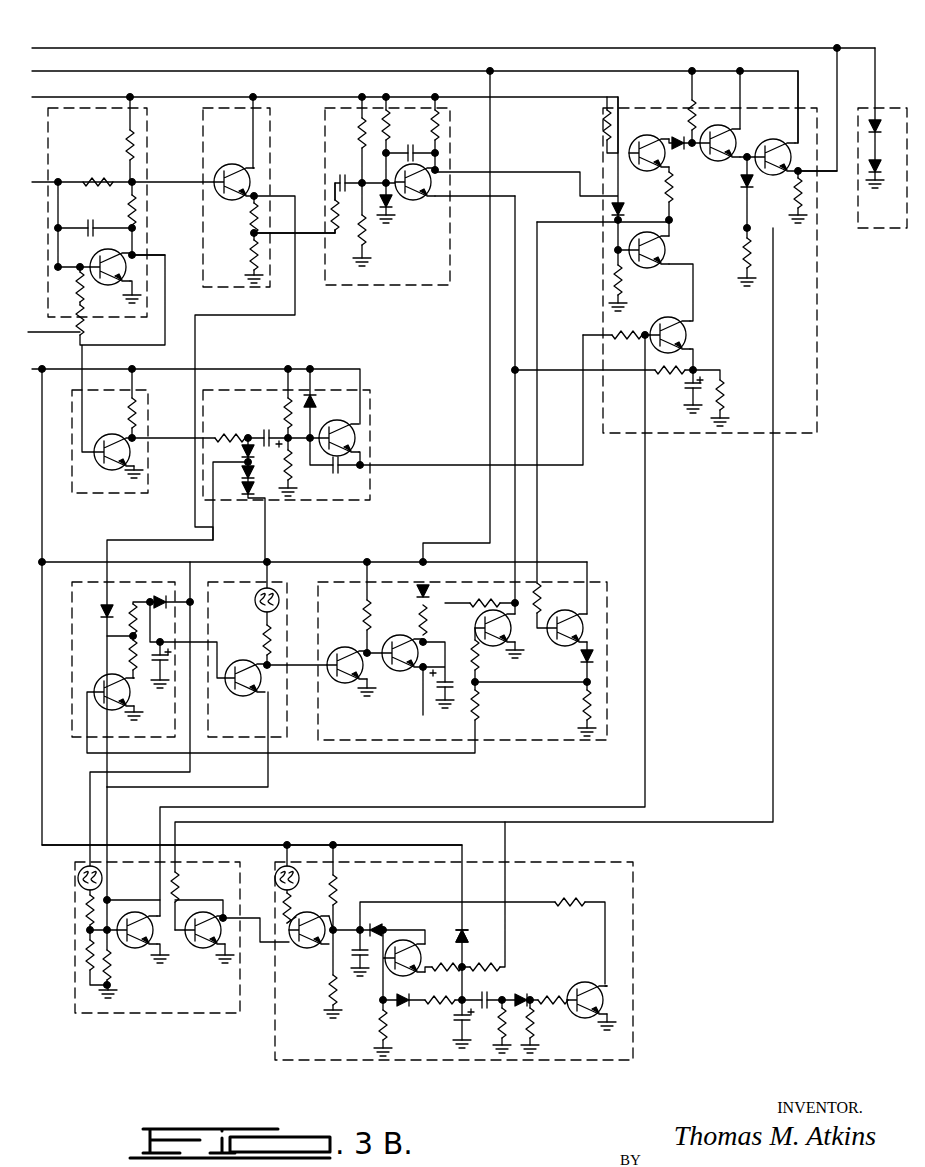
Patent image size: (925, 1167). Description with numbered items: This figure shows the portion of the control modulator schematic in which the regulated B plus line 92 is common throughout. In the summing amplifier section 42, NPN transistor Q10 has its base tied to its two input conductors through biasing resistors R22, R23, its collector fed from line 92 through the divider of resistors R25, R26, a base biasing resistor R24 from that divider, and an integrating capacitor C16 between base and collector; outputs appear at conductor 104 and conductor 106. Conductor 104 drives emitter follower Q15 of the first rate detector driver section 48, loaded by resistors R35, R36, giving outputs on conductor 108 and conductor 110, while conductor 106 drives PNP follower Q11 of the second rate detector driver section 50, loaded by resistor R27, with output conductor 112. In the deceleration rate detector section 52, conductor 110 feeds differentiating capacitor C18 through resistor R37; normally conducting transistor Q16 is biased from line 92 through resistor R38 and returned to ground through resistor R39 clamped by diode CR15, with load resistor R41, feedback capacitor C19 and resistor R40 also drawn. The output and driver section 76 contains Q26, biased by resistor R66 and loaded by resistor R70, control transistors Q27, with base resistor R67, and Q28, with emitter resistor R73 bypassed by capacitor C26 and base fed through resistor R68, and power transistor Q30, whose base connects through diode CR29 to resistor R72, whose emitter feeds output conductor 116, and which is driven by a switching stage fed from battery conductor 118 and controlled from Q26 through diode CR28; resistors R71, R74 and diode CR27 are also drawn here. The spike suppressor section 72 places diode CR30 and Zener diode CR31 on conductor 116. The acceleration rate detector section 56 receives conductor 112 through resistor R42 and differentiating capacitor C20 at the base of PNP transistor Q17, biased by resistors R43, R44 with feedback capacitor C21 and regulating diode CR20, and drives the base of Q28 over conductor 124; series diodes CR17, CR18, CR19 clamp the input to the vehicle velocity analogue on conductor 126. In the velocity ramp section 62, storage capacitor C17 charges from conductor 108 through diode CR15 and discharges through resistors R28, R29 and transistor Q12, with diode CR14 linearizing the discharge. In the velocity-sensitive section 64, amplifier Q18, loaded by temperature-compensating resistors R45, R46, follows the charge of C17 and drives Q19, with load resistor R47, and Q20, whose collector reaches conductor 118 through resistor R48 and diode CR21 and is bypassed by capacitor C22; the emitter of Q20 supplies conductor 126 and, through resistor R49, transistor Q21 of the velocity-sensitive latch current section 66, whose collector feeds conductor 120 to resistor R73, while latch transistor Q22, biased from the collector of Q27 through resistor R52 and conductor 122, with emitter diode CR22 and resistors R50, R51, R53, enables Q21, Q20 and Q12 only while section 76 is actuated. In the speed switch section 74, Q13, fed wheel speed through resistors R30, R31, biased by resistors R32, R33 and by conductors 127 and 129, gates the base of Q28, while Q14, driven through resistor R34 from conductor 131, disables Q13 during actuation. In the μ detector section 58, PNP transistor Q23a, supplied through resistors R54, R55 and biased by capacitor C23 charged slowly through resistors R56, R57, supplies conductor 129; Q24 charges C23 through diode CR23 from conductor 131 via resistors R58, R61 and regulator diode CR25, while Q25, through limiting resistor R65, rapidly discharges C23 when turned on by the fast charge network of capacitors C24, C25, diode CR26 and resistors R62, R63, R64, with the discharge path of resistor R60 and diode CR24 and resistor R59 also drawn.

The summing amplifier section 42 is at (112, 212).
The first rate detector driver section 48 is at (252, 197).
The second rate detector driver section 50 is at (129, 433).
The deceleration rate detector section 52 is at (390, 221).
The acceleration or spin-up rate detector section 56 is at (312, 426).
The μ detector section 58 is at (454, 981).
The velocity ramp section 62 is at (111, 686).
The velocity-sensitive section 64 is at (247, 686).
The velocity-sensitive latch current section 66 is at (462, 686).
The spike suppressor section 72 is at (884, 142).
The speed switch section 74 is at (157, 958).
The output and driver section 76 is at (734, 270).
The B plus line 92 is at (334, 509).
The conductor 104 is at (123, 173).
The conductor 106 is at (162, 245).
The conductor 108 is at (212, 470).
The conductor 110 is at (297, 275).
The output conductor 112 is at (349, 316).
The output conductor 116 is at (453, 91).
The conductor 118 is at (415, 81).
The output conductor 120 is at (476, 399).
The conductor 122 is at (563, 402).
The conductor 124 is at (471, 401).
The conductor 126 is at (300, 528).
The conductor 127 is at (226, 741).
The conductor 129 is at (378, 625).
The conductor 131 is at (474, 579).
The biasing resistor R22 is at (84, 295).
The biasing resistor R23 is at (84, 325).
The base biasing resistor R24 is at (97, 176).
The voltage divider resistor R25 is at (126, 142).
The voltage divider resistor R26 is at (138, 212).
The load resistor R27 is at (138, 418).
The discharge resistor R28 is at (128, 638).
The discharge resistor R29 is at (128, 660).
The resistor R30 is at (78, 878).
The resistor R31 is at (85, 910).
The biasing resistor R32 is at (86, 955).
The biasing resistor R33 is at (112, 975).
The current-limiting resistor R34 is at (180, 890).
The voltage divider resistor R35 is at (234, 218).
The voltage divider resistor R36 is at (234, 252).
The resistor R37 is at (333, 210).
The bias resistor R38 is at (346, 130).
The resistor R39 is at (372, 242).
The resistor R40 is at (392, 108).
The load resistor R41 is at (442, 118).
The resistor R42 is at (222, 430).
The base bias resistor R43 is at (285, 405).
The resistor R44 is at (292, 465).
The load resistor R45 is at (255, 600).
The load resistor R46 is at (262, 640).
The load resistor R47 is at (362, 612).
The resistor R48 is at (690, 115).
The load resistor R49 is at (482, 601).
The resistor R50 is at (478, 680).
The resistor R51 is at (480, 712).
The resistor R52 is at (542, 583).
The resistor R53 is at (582, 705).
The resistor R54 is at (252, 834).
The resistor R55 is at (303, 894).
The charge circuit resistor R56 is at (338, 888).
The charge circuit resistor R57 is at (330, 990).
The resistor R58 is at (378, 1025).
The resistor R59 is at (445, 956).
The discharge path resistor R60 is at (443, 990).
The resistor R61 is at (490, 966).
The charge path resistor R62 is at (500, 1040).
The charge path resistor R63 is at (533, 1040).
The resistor R64 is at (553, 1006).
The limiting resistor R65 is at (575, 900).
The bias resistor R66 is at (605, 138).
The resistor R67 is at (625, 282).
The resistor R68 is at (625, 333).
The load resistor R70 is at (674, 190).
The resistor R71 is at (680, 367).
The resistor R72 is at (742, 255).
The load resistor R73 is at (726, 395).
The resistor R74 is at (797, 195).
The capacitor C16 is at (89, 215).
The storage capacitor C17 is at (155, 672).
The differentiating capacitor C18 is at (345, 170).
The feedback capacitor C19 is at (414, 141).
The differentiating capacitor C20 is at (266, 430).
The feedback capacitor C21 is at (336, 474).
The capacitor C22 is at (450, 688).
The charge capacitor C23 is at (365, 958).
The capacitor C24 is at (450, 1030).
The capacitor C25 is at (488, 992).
The bypass capacitor C26 is at (688, 388).
The diode CR14 is at (103, 598).
The diode CR15 is at (392, 230).
The clamp diode CR17 is at (257, 487).
The clamp diode CR18 is at (242, 466).
The clamp diode CR19 is at (243, 500).
The regulating diode CR20 is at (314, 388).
The diode CR21 is at (420, 585).
The diode CR22 is at (583, 658).
The diode CR23 is at (376, 922).
The diode CR24 is at (410, 1019).
The regulator diode CR25 is at (470, 938).
The diode CR26 is at (544, 991).
The diode CR27 is at (612, 215).
The diode CR28 is at (676, 138).
The diode CR29 is at (742, 190).
The diode CR30 is at (862, 125).
The Zener diode CR31 is at (885, 165).
The NPN transistor Q10 is at (98, 262).
The PNP transistor Q11 is at (100, 480).
The NPN transistor Q12 is at (96, 712).
The NPN transistor Q13 is at (132, 912).
The NPN transistor Q14 is at (200, 947).
The NPN transistor Q15 is at (222, 165).
The NPN transistor Q16 is at (420, 202).
The PNP transistor Q17 is at (358, 440).
The PNP transistor Q18 is at (238, 698).
The PNP transistor Q19 is at (338, 684).
The NPN transistor Q20 is at (398, 672).
The NPN transistor Q21 is at (485, 645).
The latching transistor Q22 is at (588, 626).
The PNP transistor Q23a is at (303, 945).
The PNP transistor Q24 is at (400, 942).
The NPN transistor Q25 is at (610, 996).
The switching transistor Q26 is at (622, 165).
The control transistor Q27 is at (716, 125).
The control transistor Q28 is at (692, 336).
The power transistor Q30 is at (790, 142).